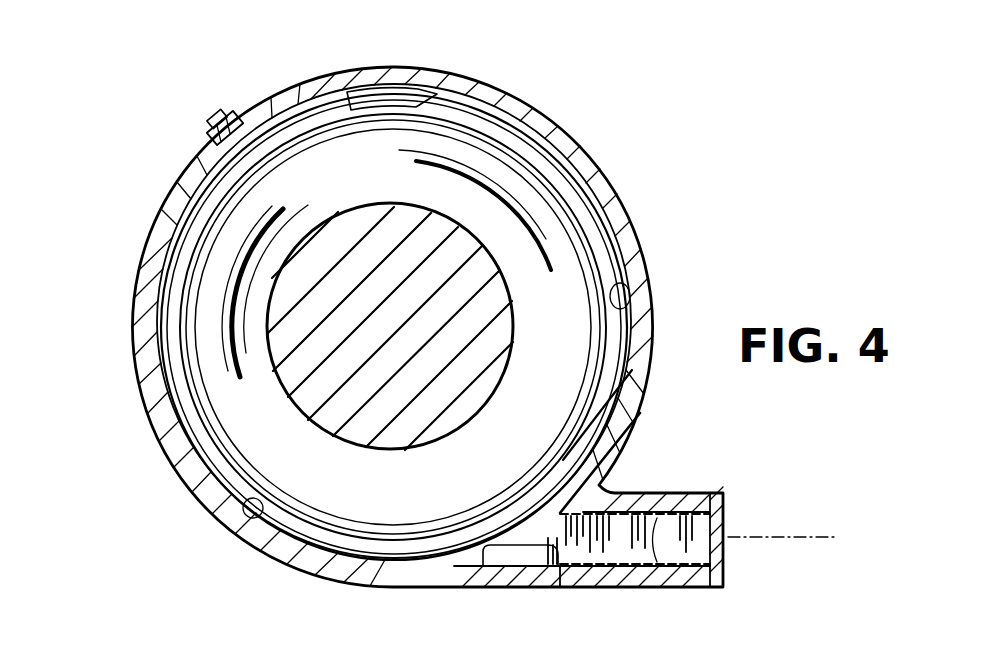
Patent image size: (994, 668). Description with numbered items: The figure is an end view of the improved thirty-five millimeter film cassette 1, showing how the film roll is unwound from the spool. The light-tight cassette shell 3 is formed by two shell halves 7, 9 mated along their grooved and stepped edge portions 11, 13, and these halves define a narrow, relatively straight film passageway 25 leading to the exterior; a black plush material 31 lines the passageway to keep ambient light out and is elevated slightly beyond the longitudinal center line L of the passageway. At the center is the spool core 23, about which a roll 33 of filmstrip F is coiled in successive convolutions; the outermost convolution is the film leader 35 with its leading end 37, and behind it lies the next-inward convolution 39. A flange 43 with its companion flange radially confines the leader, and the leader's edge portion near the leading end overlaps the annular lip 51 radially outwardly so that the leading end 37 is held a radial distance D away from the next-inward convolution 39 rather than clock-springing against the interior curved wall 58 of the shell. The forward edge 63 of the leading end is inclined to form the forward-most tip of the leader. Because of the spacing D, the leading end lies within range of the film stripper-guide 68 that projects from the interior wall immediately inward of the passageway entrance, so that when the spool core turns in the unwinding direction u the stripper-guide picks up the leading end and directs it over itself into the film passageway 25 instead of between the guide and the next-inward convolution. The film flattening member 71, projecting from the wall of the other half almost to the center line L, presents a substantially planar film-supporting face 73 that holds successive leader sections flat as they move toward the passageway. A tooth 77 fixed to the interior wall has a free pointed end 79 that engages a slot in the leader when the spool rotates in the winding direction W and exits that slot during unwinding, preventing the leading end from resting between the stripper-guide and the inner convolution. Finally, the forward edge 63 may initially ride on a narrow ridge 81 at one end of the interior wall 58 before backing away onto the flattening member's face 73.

The film cassette 1 is at (150, 190).
The cassette shell 3 is at (289, 82).
The shell half 7 is at (556, 116).
The shell half 9 is at (150, 248).
The grooved edge portion 11 is at (212, 134).
The stepped edge portion 13 is at (214, 120).
The spool core 23 is at (485, 345).
The film passageway 25 is at (634, 545).
The plush material 31 is at (670, 532).
The film roll 33 is at (566, 182).
The film leader 35 is at (602, 262).
The leading end 37 is at (155, 340).
The next-inward convolution 39 is at (640, 246).
The flange 43 is at (240, 480).
The annular lip 51 is at (224, 430).
The interior curved wall 58 is at (630, 285).
The forward edge 63 is at (232, 340).
The film stripper-guide 68 is at (536, 527).
The film flattening member 71 is at (486, 557).
The film-supporting face 73 is at (527, 548).
The tooth 77 is at (421, 96).
The free pointed end 79 is at (376, 88).
The ridge 81 is at (550, 527).
The radial distance D is at (224, 300).
The filmstrip F is at (238, 380).
The winding direction W is at (420, 483).
The longitudinal center line L is at (825, 525).
The unwinding direction u is at (470, 446).